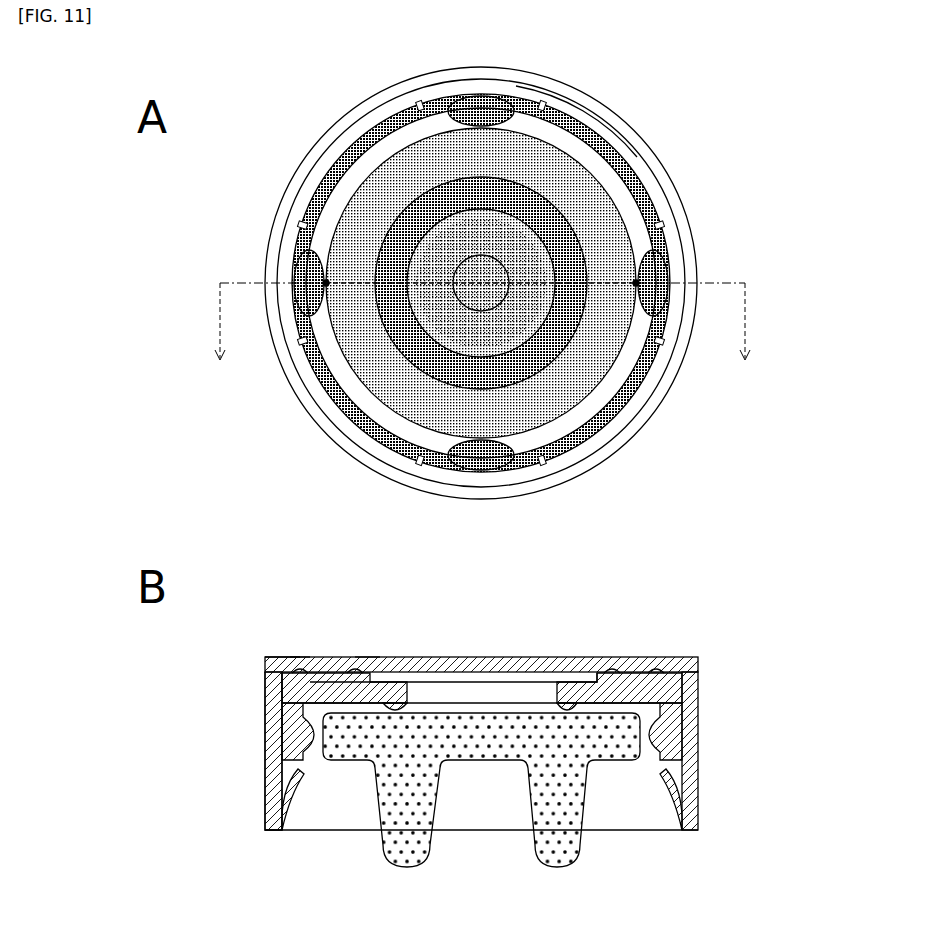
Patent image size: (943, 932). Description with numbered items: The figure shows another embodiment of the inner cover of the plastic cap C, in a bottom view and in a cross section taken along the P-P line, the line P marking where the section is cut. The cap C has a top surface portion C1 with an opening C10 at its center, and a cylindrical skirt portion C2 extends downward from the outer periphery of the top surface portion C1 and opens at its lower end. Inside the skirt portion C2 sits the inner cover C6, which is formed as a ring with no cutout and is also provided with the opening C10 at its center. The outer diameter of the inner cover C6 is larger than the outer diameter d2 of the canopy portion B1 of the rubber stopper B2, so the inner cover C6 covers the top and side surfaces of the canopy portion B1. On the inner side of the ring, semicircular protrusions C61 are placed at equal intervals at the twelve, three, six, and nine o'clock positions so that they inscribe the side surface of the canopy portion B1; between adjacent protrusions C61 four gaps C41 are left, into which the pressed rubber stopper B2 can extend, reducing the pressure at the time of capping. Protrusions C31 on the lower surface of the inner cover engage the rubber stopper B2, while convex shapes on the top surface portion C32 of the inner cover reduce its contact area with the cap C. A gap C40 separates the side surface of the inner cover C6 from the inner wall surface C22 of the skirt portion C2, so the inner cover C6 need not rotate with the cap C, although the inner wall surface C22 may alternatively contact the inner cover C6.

The plastic cap C is at (646, 110).
The top surface portion C1 is at (570, 700).
The cylindrical skirt portion C2 is at (698, 792).
The inner wall surface C22 is at (267, 747).
The inner cover C6 is at (640, 162).
The protrusions C61 is at (583, 105).
The opening C10 is at (485, 688).
The protrusions C31 is at (567, 710).
The top surface portion C32 is at (420, 662).
The gap C40 is at (303, 190).
The gaps C41 is at (358, 173).
The canopy portion B1 is at (552, 408).
The rubber stopper B2 is at (400, 348).
The outer diameter d2 is at (481, 259).
The P-P line P is at (484, 302).